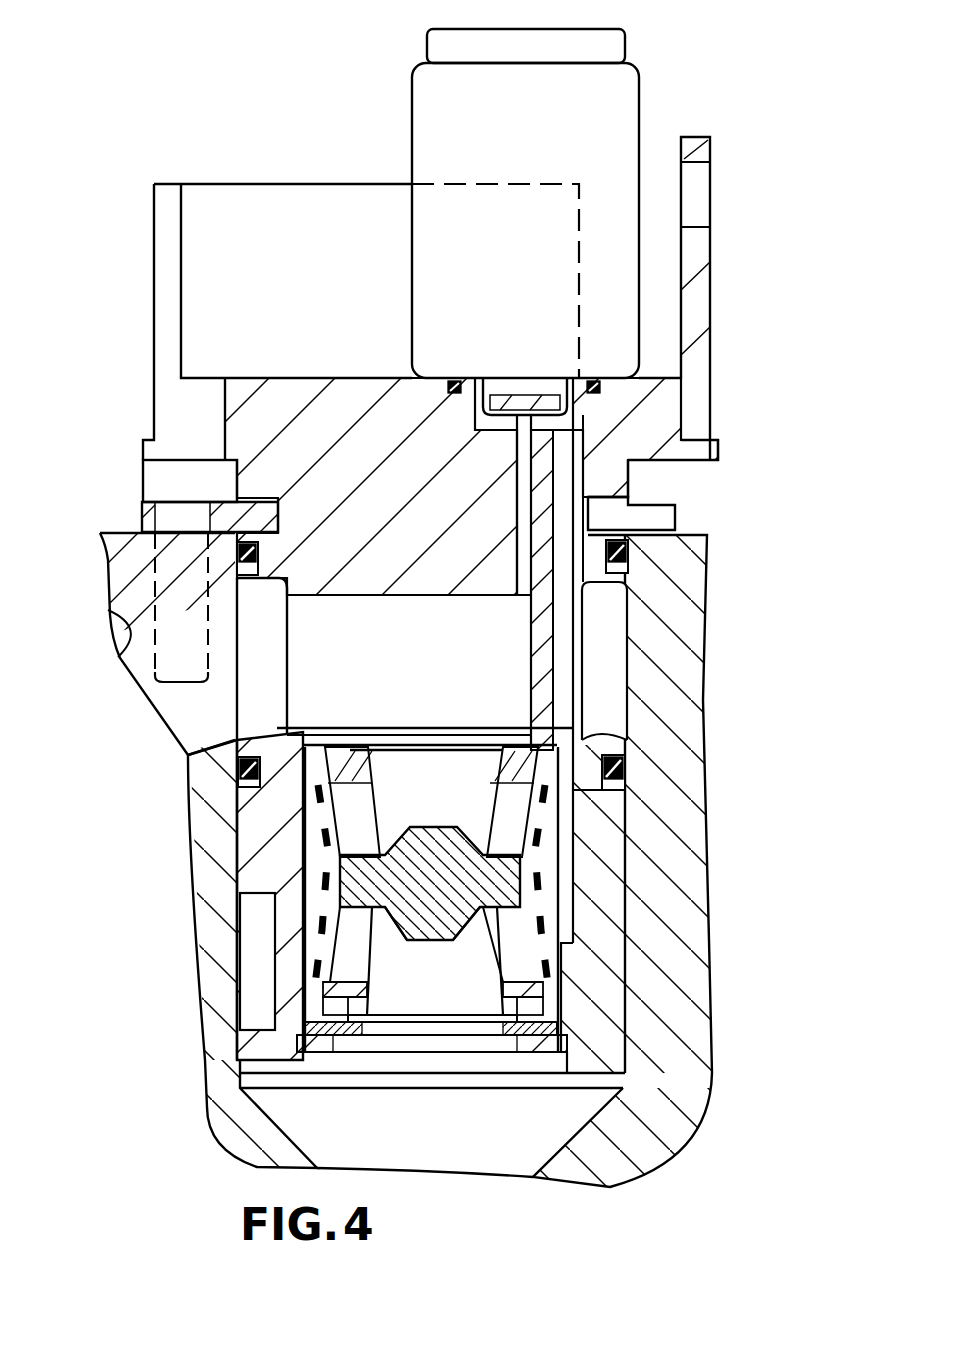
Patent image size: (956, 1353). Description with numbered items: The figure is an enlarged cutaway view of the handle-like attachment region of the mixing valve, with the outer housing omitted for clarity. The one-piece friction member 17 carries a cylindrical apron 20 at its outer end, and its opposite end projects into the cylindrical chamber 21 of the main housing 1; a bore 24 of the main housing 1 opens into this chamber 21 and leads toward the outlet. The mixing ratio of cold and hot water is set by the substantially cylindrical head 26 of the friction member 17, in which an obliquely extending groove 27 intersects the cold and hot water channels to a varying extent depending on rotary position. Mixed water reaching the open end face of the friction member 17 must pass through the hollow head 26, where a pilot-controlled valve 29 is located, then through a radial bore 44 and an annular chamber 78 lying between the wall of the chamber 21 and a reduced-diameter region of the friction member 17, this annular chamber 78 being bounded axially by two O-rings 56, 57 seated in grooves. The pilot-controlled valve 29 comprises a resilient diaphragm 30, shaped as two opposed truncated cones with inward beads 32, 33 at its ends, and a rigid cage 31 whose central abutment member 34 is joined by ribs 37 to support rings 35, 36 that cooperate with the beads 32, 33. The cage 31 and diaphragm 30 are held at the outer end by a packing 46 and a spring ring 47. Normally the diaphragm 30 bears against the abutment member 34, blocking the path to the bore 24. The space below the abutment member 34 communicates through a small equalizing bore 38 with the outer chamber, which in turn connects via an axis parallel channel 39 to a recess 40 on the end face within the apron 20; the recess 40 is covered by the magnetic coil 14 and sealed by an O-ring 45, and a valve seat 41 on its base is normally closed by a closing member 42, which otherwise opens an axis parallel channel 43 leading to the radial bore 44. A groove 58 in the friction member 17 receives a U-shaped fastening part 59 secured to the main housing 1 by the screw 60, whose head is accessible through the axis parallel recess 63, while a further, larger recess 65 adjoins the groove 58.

The main housing 1 is at (603, 1155).
The magnetic coil 14 is at (546, 138).
The friction member 17 is at (248, 416).
The cylindrical apron 20 is at (700, 287).
The cylindrical chamber 21 is at (627, 760).
The bore 24 is at (233, 595).
The cylindrical head 26 is at (612, 930).
The groove 27 is at (273, 922).
The pilot-controlled valve 29 is at (355, 872).
The diaphragm 30 is at (317, 970).
The cage 31 is at (427, 905).
The bead 32 is at (330, 1025).
The bead 33 is at (340, 752).
The abutment member 34 is at (497, 882).
The support ring 35 is at (557, 1023).
The support ring 36 is at (575, 748).
The ribs 37 is at (503, 963).
The equalizing bore 38 is at (540, 933).
The axis parallel channel 39 is at (645, 447).
The recess 40 is at (577, 417).
The valve seat 41 is at (490, 430).
The closing member 42 is at (528, 393).
The axis parallel channel 43 is at (517, 590).
The radial bore 44 is at (400, 600).
The O-ring 45 is at (453, 378).
The packing 46 is at (567, 1050).
The spring ring 47 is at (297, 1047).
The O-ring 56 is at (635, 560).
The O-ring 57 is at (627, 785).
The groove 58 is at (690, 532).
The U-shaped fastening part 59 is at (205, 558).
The screw 60 is at (182, 480).
The recess 63 is at (225, 433).
The recess 65 is at (657, 463).
The annular chamber 78 is at (620, 637).